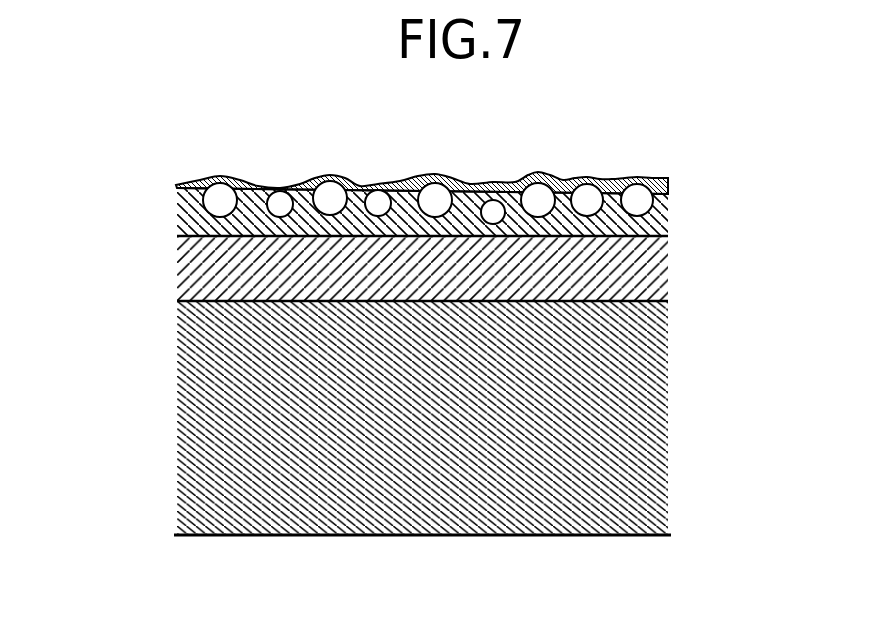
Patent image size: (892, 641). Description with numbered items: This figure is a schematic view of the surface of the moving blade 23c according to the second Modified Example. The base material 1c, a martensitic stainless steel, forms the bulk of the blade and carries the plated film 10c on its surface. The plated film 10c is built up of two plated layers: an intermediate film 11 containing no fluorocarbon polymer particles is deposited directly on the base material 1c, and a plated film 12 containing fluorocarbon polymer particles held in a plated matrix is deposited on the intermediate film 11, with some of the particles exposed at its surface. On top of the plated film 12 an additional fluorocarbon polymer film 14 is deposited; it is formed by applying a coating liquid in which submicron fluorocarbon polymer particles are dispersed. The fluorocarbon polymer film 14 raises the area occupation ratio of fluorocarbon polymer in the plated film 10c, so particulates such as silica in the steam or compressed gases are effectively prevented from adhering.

The moving blade 23c is at (414, 334).
The plated film 10c is at (414, 208).
The intermediate film 11 is at (676, 237).
The plated film containing fluorocarbon polymer particles 12 is at (472, 176).
The fluorocarbon polymer film 14 is at (435, 155).
The base material 1c is at (580, 537).